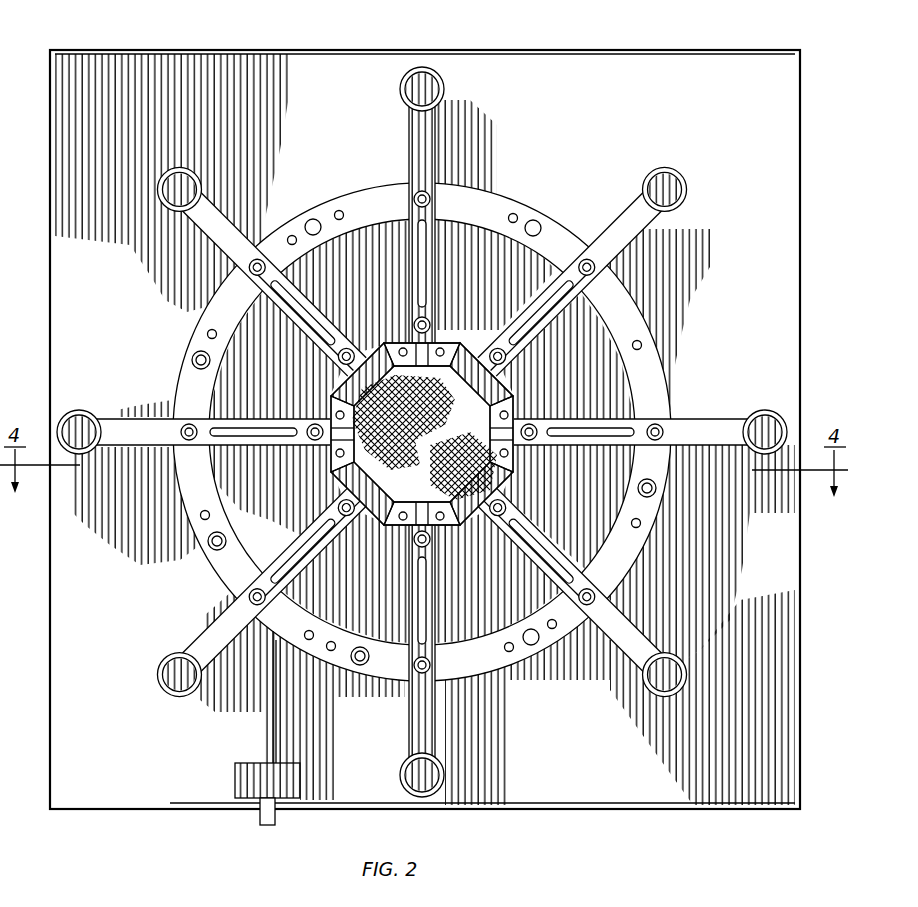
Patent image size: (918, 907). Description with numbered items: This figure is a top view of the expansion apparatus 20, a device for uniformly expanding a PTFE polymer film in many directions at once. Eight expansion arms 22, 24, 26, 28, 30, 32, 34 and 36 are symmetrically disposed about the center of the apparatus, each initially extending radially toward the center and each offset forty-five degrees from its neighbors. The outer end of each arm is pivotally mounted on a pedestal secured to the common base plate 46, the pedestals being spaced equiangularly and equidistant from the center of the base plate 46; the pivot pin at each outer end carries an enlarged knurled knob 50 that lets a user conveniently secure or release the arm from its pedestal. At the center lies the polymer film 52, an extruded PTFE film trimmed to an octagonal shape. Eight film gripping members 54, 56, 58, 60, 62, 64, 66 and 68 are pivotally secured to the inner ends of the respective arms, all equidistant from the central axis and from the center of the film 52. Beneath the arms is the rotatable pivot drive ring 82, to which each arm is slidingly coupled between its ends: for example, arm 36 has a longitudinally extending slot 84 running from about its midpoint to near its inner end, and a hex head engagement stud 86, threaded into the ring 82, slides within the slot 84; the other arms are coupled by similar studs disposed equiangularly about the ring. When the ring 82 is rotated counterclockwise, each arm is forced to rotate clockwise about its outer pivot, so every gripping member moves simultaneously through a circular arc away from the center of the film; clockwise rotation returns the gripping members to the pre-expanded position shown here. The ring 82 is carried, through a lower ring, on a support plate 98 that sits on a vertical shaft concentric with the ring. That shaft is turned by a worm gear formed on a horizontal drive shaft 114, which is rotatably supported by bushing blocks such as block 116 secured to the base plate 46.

The expansion apparatus 20 is at (537, 30).
The expansion arm 22 is at (621, 630).
The expansion arm 24 is at (697, 417).
The expansion arm 26 is at (614, 234).
The expansion arm 28 is at (418, 154).
The expansion arm 30 is at (230, 213).
The expansion arm 32 is at (137, 437).
The expansion arm 34 is at (210, 624).
The expansion arm 36 is at (426, 641).
The base plate 46 is at (607, 754).
The knurled knob 50 is at (446, 780).
The polymer film 52 is at (470, 410).
The film gripping member 54 is at (503, 480).
The film gripping member 56 is at (517, 409).
The film gripping member 58 is at (484, 346).
The film gripping member 60 is at (442, 340).
The film gripping member 62 is at (352, 388).
The film gripping member 64 is at (333, 462).
The film gripping member 66 is at (376, 530).
The film gripping member 68 is at (443, 522).
The pivot drive ring 82 is at (510, 204).
The slot 84 is at (418, 618).
The hex head engagement stud 86 is at (433, 650).
The support plate 98 is at (595, 523).
The drive shaft 114 is at (276, 703).
The bushing block 116 is at (293, 772).